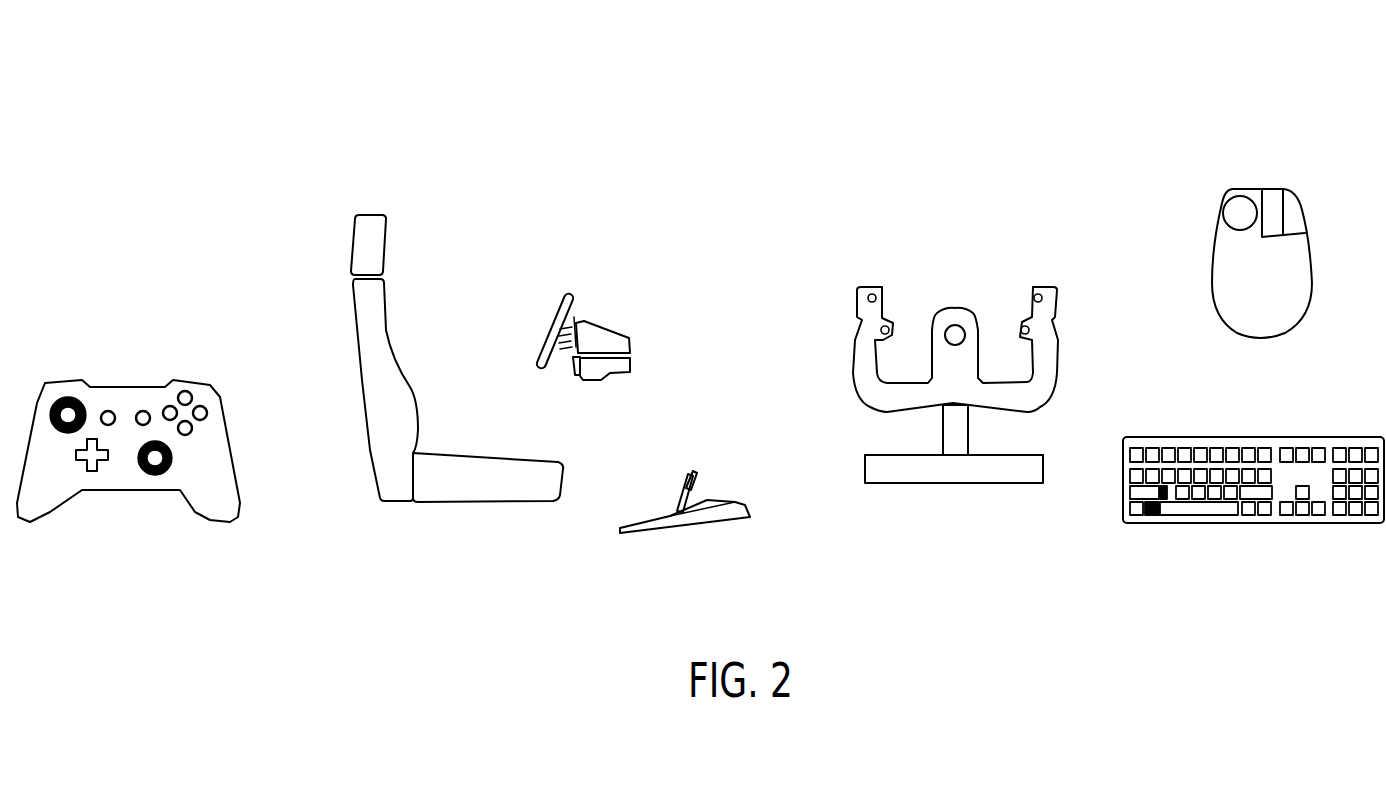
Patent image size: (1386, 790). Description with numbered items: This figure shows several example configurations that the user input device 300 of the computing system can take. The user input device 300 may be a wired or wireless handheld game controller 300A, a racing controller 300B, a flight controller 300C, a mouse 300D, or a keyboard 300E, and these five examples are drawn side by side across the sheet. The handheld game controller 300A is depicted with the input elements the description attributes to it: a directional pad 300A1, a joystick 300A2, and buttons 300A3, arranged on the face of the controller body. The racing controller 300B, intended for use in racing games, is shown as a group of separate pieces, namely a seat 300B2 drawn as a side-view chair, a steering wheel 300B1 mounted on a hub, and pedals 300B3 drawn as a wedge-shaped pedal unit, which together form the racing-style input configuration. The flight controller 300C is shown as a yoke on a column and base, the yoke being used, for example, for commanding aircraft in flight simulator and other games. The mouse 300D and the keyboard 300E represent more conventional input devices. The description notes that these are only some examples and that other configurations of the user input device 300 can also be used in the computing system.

The user input device 300 is at (840, 95).
The handheld game controller 300A is at (130, 383).
The directional pad 300A1 is at (83, 470).
The joystick 300A2 is at (152, 473).
The buttons 300A3 is at (210, 412).
The racing controller 300B is at (500, 265).
The steering wheel 300B1 is at (438, 452).
The seat 300B2 is at (610, 332).
The pedals 300B3 is at (697, 493).
The flight controller 300C is at (975, 283).
The mouse 300D is at (1262, 189).
The keyboard 300E is at (1237, 437).